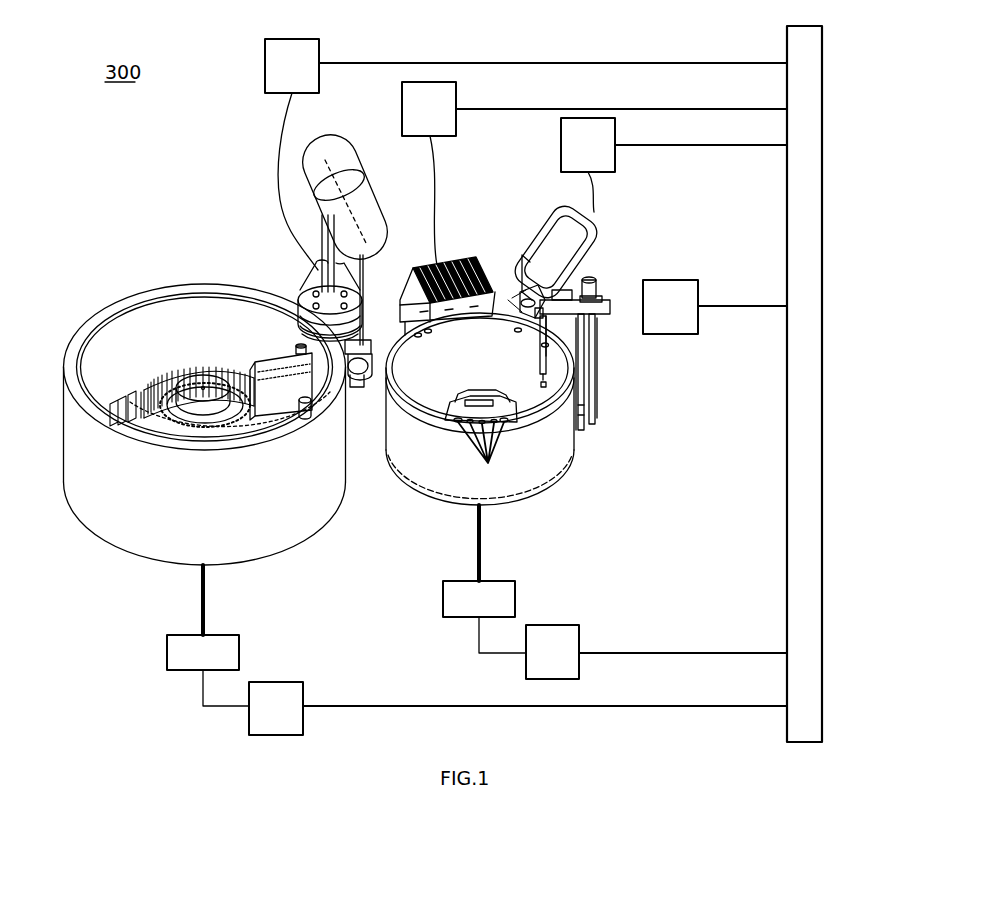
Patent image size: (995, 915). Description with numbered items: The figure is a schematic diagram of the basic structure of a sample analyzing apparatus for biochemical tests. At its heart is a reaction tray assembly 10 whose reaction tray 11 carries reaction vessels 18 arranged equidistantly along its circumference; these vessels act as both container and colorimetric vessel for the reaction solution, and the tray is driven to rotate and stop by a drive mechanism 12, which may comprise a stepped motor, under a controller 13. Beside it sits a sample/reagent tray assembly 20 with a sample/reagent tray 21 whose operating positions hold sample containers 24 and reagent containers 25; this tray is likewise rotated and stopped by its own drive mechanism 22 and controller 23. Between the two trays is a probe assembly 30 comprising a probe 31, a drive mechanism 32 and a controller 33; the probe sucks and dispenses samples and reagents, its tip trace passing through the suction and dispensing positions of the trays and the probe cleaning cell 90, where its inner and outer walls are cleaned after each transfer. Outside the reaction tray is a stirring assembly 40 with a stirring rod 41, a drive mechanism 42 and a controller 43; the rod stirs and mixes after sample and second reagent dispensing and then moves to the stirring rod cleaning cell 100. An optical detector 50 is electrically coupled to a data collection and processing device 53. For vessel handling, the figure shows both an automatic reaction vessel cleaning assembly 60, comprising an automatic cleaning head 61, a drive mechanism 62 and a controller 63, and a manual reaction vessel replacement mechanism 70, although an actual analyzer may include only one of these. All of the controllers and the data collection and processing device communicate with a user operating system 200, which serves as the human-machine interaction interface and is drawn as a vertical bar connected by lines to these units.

The user operating system 200 is at (807, 388).
The reaction tray assembly 10 is at (508, 426).
The reaction tray 11 is at (525, 472).
The drive mechanism 12 is at (500, 596).
The controller 13 is at (555, 642).
The reaction vessels 18 is at (482, 455).
The sample/reagent tray assembly 20 is at (188, 435).
The sample/reagent tray 21 is at (178, 335).
The drive mechanism 22 is at (185, 652).
The controller 23 is at (265, 722).
The sample containers 24 is at (305, 418).
The reagent containers 25 is at (283, 357).
The probe assembly 30 is at (310, 282).
The probe 31 is at (362, 272).
The drive mechanism 32 is at (298, 292).
The controller 33 is at (292, 62).
The stirring assembly 40 is at (571, 265).
The stirring rod 41 is at (523, 298).
The drive mechanism 42 is at (556, 222).
The controller 43 is at (595, 142).
The optical detector 50 is at (440, 268).
The data collection and processing device 53 is at (436, 108).
The automatic reaction vessel cleaning assembly 60 is at (596, 353).
The automatic cleaning head 61 is at (560, 345).
The drive mechanism 62 is at (592, 306).
The controller 63 is at (680, 319).
The manual reaction vessel replacement mechanism 70 is at (480, 403).
The probe cleaning cell 90 is at (372, 365).
The stirring rod cleaning cell 100 is at (535, 313).